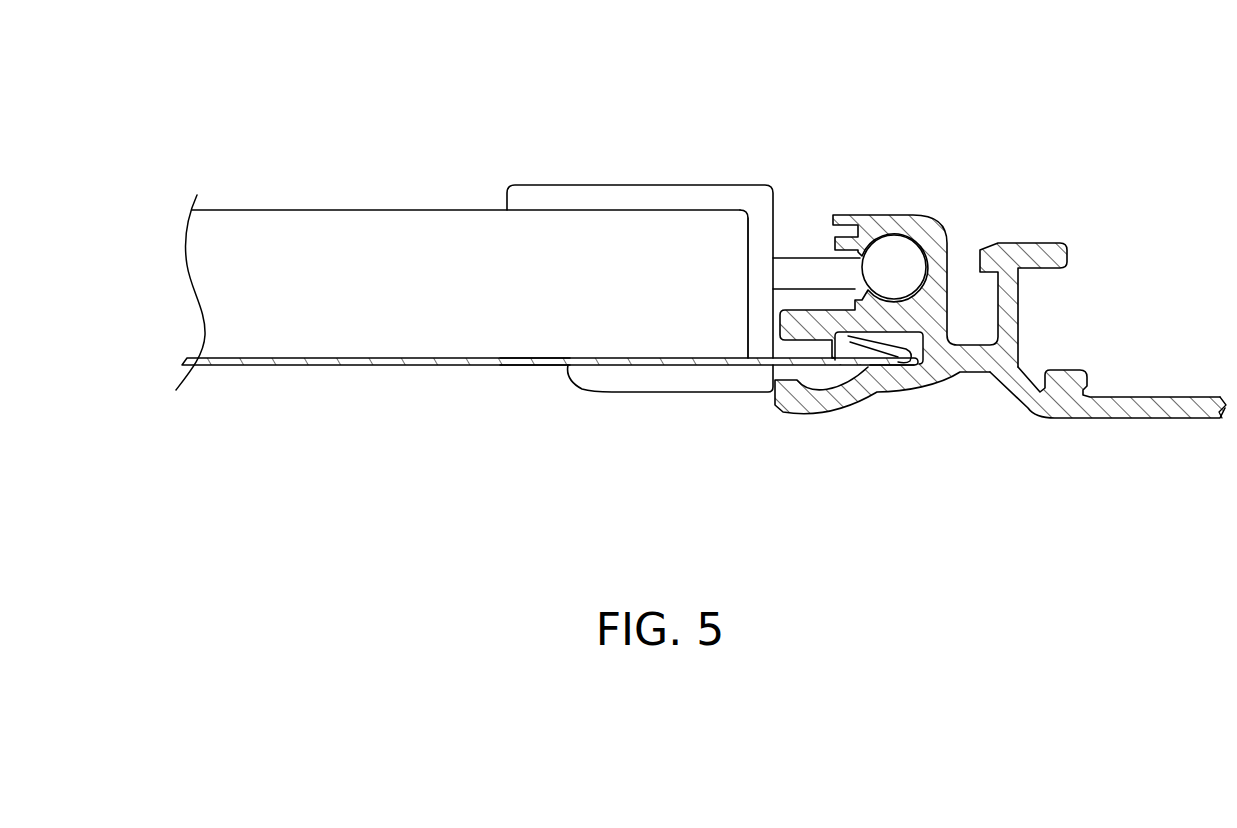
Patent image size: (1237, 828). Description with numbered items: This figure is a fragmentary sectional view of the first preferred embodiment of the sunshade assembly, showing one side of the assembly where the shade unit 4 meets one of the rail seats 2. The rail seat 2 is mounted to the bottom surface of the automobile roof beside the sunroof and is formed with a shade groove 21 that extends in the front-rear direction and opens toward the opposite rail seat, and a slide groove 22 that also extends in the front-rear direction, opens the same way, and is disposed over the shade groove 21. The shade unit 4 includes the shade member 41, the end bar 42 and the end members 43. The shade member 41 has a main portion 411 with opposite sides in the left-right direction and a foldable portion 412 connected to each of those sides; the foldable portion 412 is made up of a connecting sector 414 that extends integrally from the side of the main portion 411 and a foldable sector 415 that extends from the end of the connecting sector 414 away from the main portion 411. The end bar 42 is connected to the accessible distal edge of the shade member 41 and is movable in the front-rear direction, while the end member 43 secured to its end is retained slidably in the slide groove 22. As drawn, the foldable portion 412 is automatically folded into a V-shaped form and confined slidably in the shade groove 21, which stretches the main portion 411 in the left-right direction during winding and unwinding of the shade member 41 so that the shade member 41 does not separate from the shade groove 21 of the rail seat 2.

The rail seat 2 is at (921, 186).
The shade unit 4 is at (335, 184).
The shade groove 21 is at (917, 348).
The slide groove 22 is at (948, 242).
The shade member 41 is at (478, 375).
The main portion 411 is at (536, 366).
The foldable portion 412 is at (847, 498).
The connecting sector 414 is at (885, 366).
The foldable sector 415 is at (908, 362).
The end bar 42 is at (418, 245).
The end member 43 is at (893, 257).